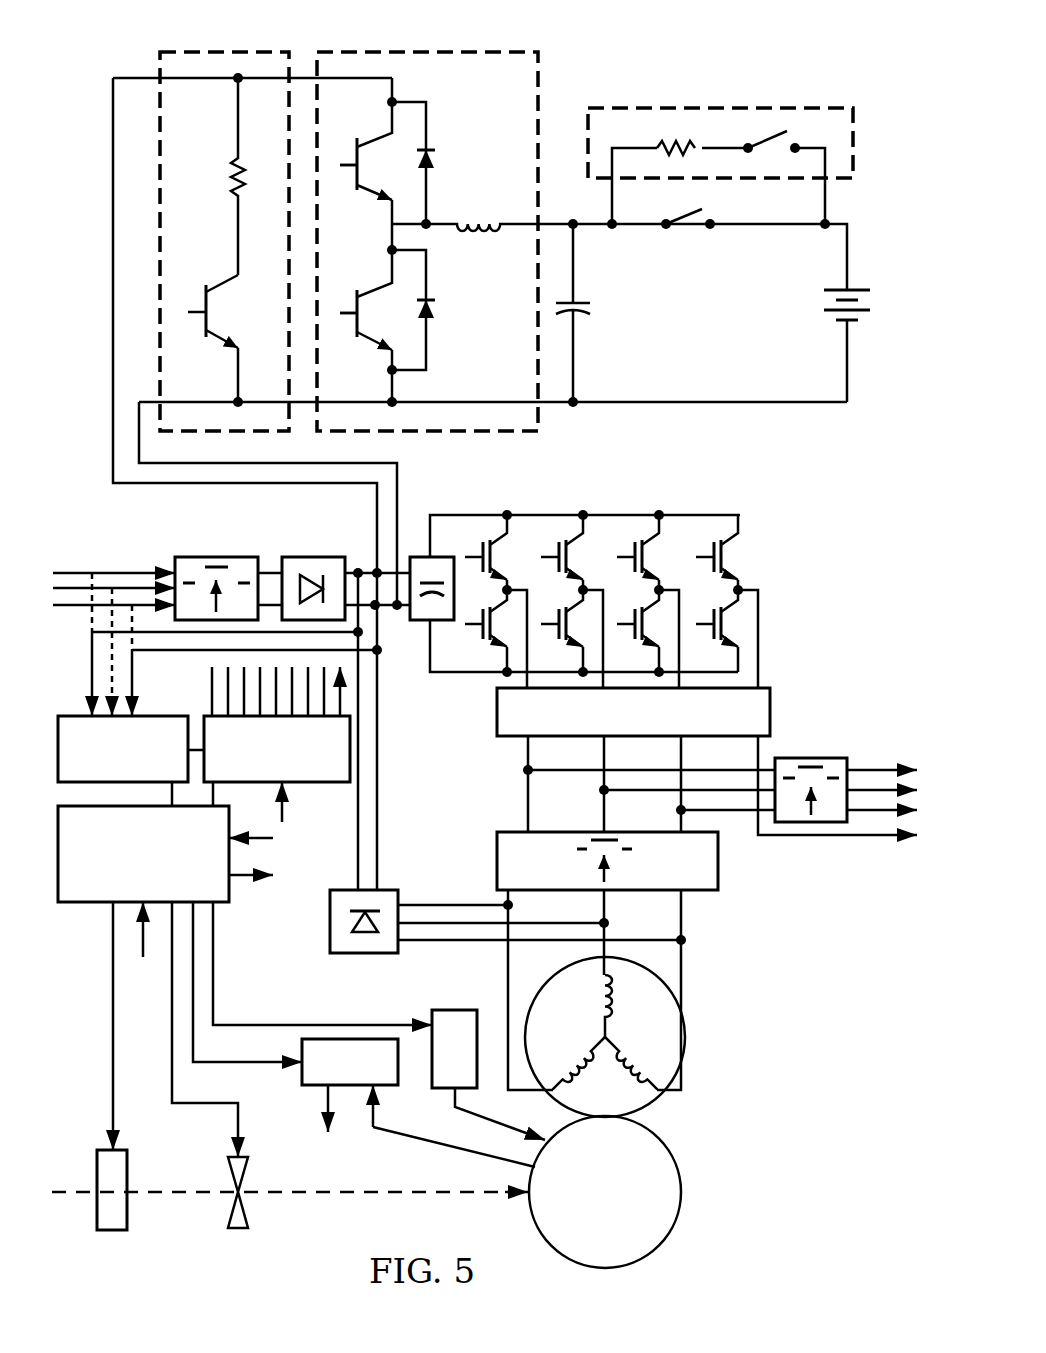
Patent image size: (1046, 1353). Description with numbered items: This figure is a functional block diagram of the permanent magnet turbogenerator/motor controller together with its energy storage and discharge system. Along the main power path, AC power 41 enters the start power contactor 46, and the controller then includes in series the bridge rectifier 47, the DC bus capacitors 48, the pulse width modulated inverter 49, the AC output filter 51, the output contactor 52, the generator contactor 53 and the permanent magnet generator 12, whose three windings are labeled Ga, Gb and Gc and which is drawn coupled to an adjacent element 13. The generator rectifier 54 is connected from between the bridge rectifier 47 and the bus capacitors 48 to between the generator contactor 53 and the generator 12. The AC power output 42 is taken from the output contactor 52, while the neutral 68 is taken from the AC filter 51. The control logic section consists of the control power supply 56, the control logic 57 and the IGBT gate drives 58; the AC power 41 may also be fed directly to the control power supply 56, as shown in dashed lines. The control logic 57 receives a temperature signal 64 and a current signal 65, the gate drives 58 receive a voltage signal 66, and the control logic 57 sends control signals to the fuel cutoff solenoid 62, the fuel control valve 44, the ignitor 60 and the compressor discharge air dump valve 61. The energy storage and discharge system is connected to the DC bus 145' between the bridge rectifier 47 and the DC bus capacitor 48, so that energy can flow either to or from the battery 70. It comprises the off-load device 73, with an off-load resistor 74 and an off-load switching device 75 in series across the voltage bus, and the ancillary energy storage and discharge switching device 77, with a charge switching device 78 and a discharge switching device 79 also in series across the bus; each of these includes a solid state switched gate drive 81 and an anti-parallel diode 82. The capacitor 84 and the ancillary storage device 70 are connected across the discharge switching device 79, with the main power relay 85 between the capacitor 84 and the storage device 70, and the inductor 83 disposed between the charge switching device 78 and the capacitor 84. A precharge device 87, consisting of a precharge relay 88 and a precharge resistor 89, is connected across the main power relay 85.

The permanent magnet generator 12 is at (683, 1027).
The engine 13 is at (678, 1175).
The AC power 41 is at (88, 607).
The AC power output 42 is at (886, 810).
The fuel control valve 44 is at (250, 1174).
The start power contactor 46 is at (213, 557).
The bridge rectifier 47 is at (300, 557).
The DC bus capacitors 48 is at (420, 540).
The pulse width modulated inverter 49 is at (577, 495).
The AC output filter 51 is at (770, 688).
The output contactor 52 is at (790, 758).
The generator contactor 53 is at (718, 890).
The generator rectifier 54 is at (383, 890).
The control power supply 56 is at (163, 700).
The control logic 57 is at (75, 902).
The IGBT gate drives 58 is at (277, 724).
The ignitor 60 is at (345, 995).
The compressor discharge air dump valve 61 is at (295, 1017).
The fuel cutoff solenoid 62 is at (127, 1163).
The temperature signal 64 is at (141, 957).
The current signal 65 is at (268, 840).
The voltage signal 66 is at (283, 818).
The neutral output 68 is at (882, 838).
The ancillary electric storage device 70 is at (855, 285).
The off-load device 73 is at (240, 48).
The off-load resistor 74 is at (232, 170).
The off-load switching device 75 is at (210, 330).
The ancillary energy storage and discharge switching device 77 is at (512, 48).
The charge switching device 78 is at (402, 125).
The discharge switching device 79 is at (402, 342).
The solid state switched gate drive 81 is at (378, 133).
The anti-parallel diode 82 is at (436, 157).
The inductor 83 is at (478, 222).
The capacitor 84 is at (590, 301).
The main power relay 85 is at (688, 230).
The precharge device 87 is at (718, 103).
The precharge relay 88 is at (772, 128).
The precharge resistor 89 is at (664, 143).
The DC bus 145' is at (289, 341).
The generator winding a Ga is at (548, 1095).
The generator winding b Gb is at (607, 965).
The generator winding c Gc is at (672, 1095).